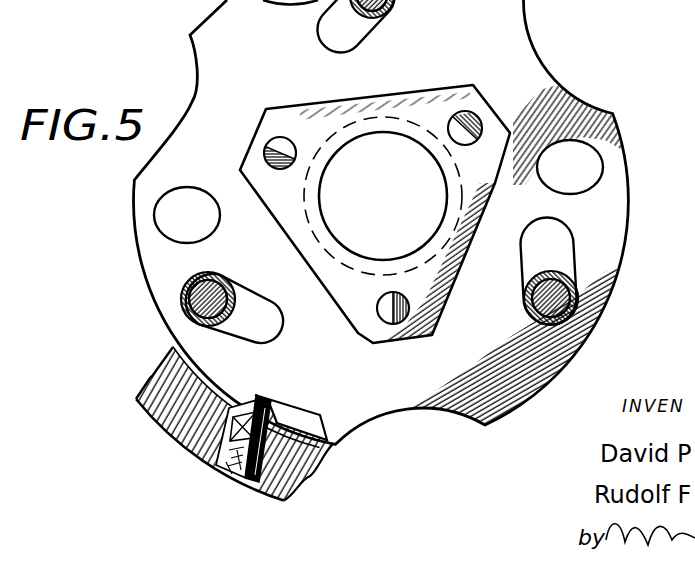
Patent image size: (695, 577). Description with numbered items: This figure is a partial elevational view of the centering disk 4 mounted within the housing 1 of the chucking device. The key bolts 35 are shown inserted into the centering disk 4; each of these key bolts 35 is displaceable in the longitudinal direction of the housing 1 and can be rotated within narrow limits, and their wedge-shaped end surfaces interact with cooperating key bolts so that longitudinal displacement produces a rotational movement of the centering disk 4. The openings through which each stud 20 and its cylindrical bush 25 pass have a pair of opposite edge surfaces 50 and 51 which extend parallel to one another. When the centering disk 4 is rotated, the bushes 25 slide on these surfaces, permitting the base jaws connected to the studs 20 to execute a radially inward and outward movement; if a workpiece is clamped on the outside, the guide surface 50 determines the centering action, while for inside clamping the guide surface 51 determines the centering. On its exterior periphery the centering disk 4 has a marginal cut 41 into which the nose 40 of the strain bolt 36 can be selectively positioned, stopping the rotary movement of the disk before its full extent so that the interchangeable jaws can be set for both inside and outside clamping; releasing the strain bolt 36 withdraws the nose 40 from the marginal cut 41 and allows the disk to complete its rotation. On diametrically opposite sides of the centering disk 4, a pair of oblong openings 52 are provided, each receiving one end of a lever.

The housing 1 is at (149, 380).
The centering disk 4 is at (197, 69).
The stud 20 is at (193, 308).
The cylindrical bush 25 is at (186, 303).
The key bolt 35 is at (271, 141).
The strain bolt 36 is at (229, 437).
The nose 40 is at (268, 402).
The marginal cut 41 is at (302, 426).
The guide surface 50 is at (262, 294).
The guide surface 51 is at (244, 337).
The oblong opening 52 is at (157, 213).